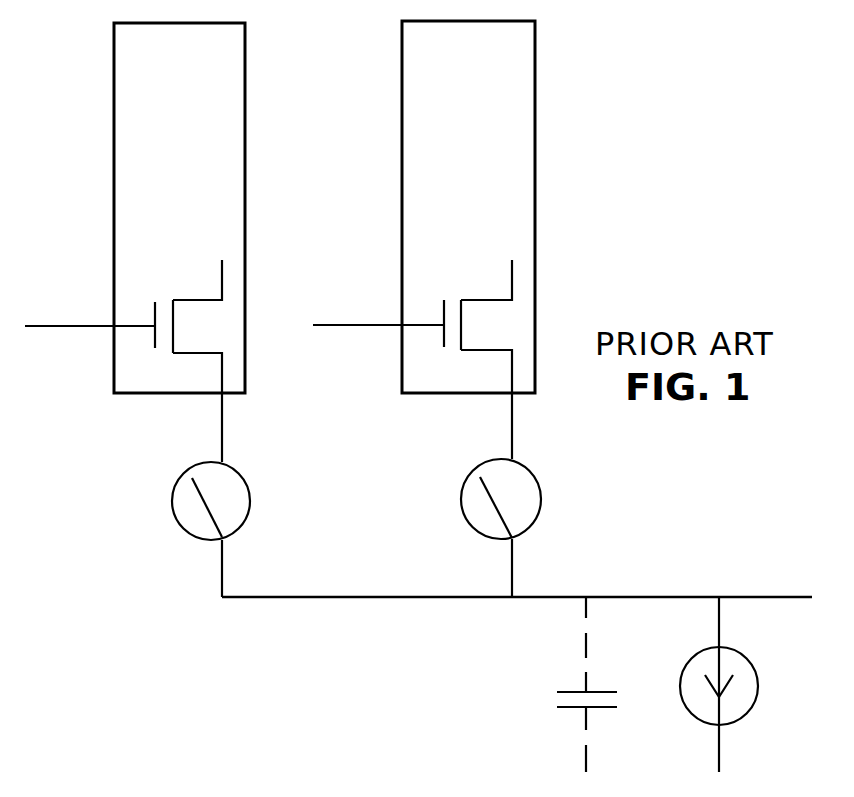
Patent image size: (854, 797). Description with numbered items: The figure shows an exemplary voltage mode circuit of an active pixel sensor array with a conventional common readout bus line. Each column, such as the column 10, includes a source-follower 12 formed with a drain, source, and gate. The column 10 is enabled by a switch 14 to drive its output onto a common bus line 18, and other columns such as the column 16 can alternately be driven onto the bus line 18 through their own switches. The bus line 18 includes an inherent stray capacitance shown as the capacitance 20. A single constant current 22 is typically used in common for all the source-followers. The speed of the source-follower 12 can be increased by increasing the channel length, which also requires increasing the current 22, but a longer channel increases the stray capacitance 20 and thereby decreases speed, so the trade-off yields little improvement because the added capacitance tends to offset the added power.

The column 10 is at (245, 78).
The source-follower 12 is at (198, 285).
The switch 14 is at (173, 488).
The other column 16 is at (535, 62).
The common bus line 18 is at (373, 597).
The stray capacitance 20 is at (571, 686).
The constant current 22 is at (760, 661).